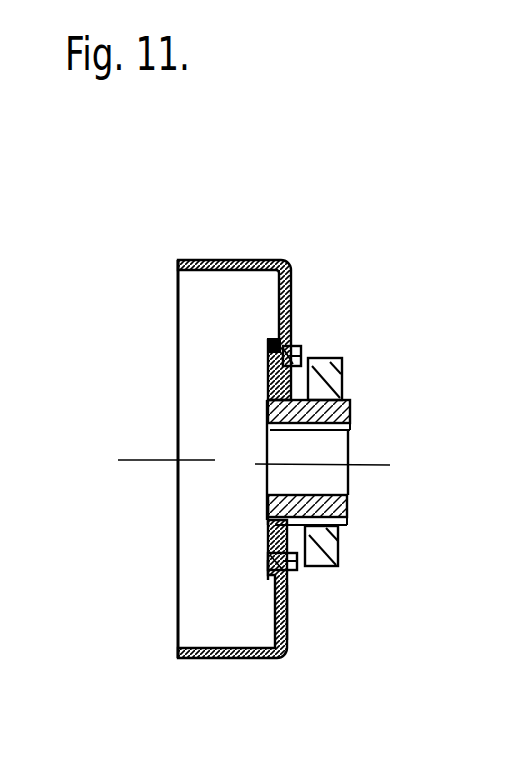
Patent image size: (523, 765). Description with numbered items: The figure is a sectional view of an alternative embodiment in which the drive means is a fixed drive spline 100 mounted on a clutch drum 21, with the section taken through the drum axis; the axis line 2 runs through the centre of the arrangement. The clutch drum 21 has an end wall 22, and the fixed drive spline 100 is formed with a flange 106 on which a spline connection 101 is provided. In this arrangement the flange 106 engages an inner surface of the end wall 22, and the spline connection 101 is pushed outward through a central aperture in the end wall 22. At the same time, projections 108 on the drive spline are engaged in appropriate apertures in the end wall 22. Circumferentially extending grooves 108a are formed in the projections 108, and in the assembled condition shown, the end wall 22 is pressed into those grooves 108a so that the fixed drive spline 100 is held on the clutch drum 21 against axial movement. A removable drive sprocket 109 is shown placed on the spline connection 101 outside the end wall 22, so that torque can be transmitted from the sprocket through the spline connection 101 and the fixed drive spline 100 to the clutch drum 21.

The shaft 2 is at (316, 450).
The clutch drum 21 is at (177, 255).
The end wall 22 is at (290, 634).
The fixed drive spline 100 is at (256, 514).
The spline connection 101 is at (365, 402).
The flange 106 is at (252, 577).
The projections 108 is at (310, 345).
The circumferentially extending grooves 108a is at (288, 349).
The removable drive sprocket 109 is at (355, 372).